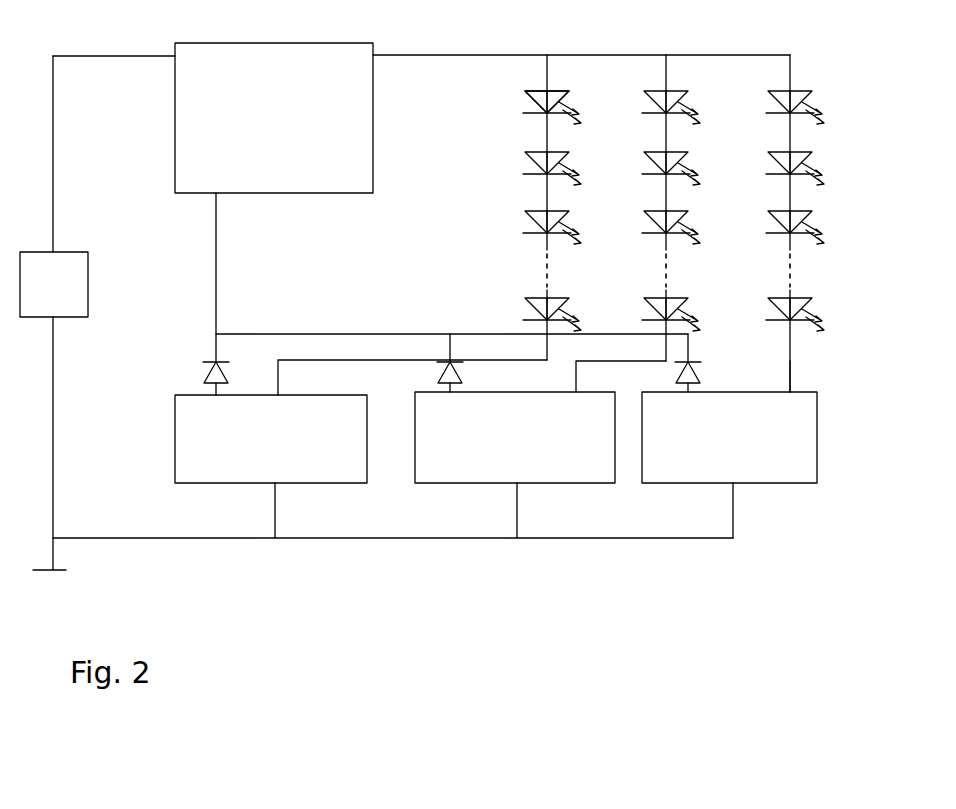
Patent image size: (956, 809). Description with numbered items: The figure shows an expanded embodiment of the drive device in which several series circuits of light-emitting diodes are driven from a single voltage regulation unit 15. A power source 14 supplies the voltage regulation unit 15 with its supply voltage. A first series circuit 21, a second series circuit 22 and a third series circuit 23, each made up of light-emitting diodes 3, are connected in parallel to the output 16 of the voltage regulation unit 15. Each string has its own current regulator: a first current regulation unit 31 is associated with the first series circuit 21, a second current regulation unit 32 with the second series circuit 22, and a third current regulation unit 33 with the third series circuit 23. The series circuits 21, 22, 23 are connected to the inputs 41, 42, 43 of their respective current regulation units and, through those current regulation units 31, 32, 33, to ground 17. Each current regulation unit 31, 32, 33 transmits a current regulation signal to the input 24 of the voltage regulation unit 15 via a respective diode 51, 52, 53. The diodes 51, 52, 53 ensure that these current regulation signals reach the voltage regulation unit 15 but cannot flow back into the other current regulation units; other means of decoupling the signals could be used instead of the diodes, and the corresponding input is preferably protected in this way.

The light-emitting diodes 3 is at (552, 93).
The power source 14 is at (66, 297).
The voltage regulation unit 15 is at (287, 134).
The output 16 is at (408, 56).
The ground 17 is at (60, 568).
The first series circuit 21 is at (499, 137).
The second series circuit 22 is at (635, 124).
The third series circuit 23 is at (763, 134).
The input 24 is at (218, 207).
The first current regulation unit 31 is at (262, 445).
The second current regulation unit 32 is at (497, 443).
The third current regulation unit 33 is at (714, 446).
The input 41 is at (280, 378).
The input 42 is at (578, 378).
The input 43 is at (795, 375).
The diode 51 is at (204, 373).
The diode 52 is at (462, 376).
The diode 53 is at (700, 375).